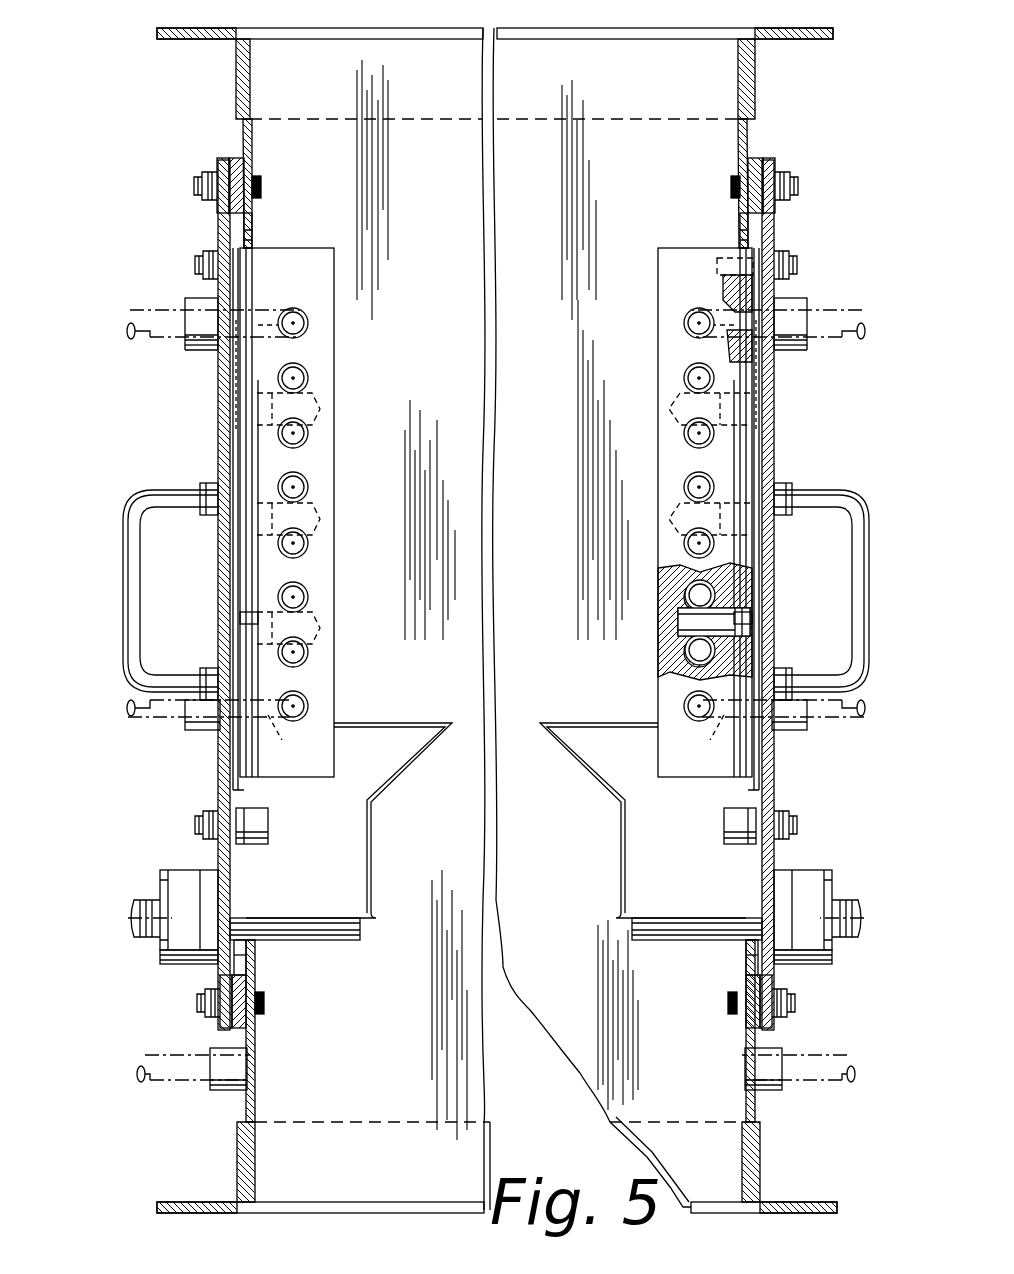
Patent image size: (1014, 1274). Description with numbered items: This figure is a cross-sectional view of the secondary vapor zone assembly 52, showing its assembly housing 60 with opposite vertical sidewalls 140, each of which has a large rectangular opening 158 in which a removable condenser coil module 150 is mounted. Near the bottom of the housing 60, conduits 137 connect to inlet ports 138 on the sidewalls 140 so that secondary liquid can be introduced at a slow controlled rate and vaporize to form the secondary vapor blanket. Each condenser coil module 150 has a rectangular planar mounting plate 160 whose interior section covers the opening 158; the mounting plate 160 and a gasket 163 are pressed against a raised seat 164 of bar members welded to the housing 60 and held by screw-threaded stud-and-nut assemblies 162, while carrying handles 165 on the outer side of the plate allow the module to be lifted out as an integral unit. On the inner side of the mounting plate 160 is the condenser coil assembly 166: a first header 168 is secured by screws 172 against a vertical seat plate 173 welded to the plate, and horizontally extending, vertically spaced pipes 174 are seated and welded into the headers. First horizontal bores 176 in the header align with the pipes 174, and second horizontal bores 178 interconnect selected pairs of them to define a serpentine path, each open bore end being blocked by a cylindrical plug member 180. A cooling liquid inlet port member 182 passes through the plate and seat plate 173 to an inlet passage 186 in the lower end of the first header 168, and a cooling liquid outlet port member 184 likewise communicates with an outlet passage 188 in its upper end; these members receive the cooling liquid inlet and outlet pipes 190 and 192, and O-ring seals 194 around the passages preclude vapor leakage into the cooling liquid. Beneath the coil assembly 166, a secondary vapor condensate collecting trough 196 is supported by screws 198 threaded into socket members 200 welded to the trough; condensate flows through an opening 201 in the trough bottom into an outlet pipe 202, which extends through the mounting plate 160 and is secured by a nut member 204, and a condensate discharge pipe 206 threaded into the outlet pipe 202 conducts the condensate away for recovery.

The secondary vapor zone assembly 52 is at (480, 23).
The assembly housing 60 is at (210, 118).
The vertical sidewall 140 is at (250, 102).
The mounting plate 160 is at (226, 566).
The gasket 163 is at (222, 163).
The raised seat 164 is at (240, 182).
The condenser coil module 150 is at (185, 232).
The rectangular opening 158 is at (252, 238).
The condenser coil assembly 166 is at (345, 278).
The first header 168 is at (318, 258).
The seat plate 173 is at (240, 408).
The screw 172 is at (195, 266).
The outlet passage 188 is at (268, 312).
The pipe 174 is at (305, 430).
The cooling liquid outlet port member 184 is at (206, 348).
The cooling liquid outlet pipe 192 is at (147, 340).
The carrying handle 165 is at (158, 497).
The second horizontal bore 178 is at (320, 620).
The first horizontal bore 176 is at (685, 594).
The cylindrical plug member 180 is at (258, 620).
The cooling liquid inlet pipe 190 is at (140, 720).
The cooling liquid inlet port member 182 is at (205, 733).
The inlet passage 186 is at (282, 742).
The screw 198 is at (205, 818).
The socket member 200 is at (268, 824).
The nut member 204 is at (182, 876).
The condensate discharge pipe 206 is at (136, 898).
The secondary vapor condensate collecting trough 196 is at (372, 868).
The opening 201 is at (296, 916).
The outlet pipe 202 is at (154, 954).
The stud-and-nut assembly 162 is at (205, 1017).
The conduit 137 is at (182, 1082).
The inlet port 138 is at (226, 1092).
The O-ring seal 194 is at (748, 300).